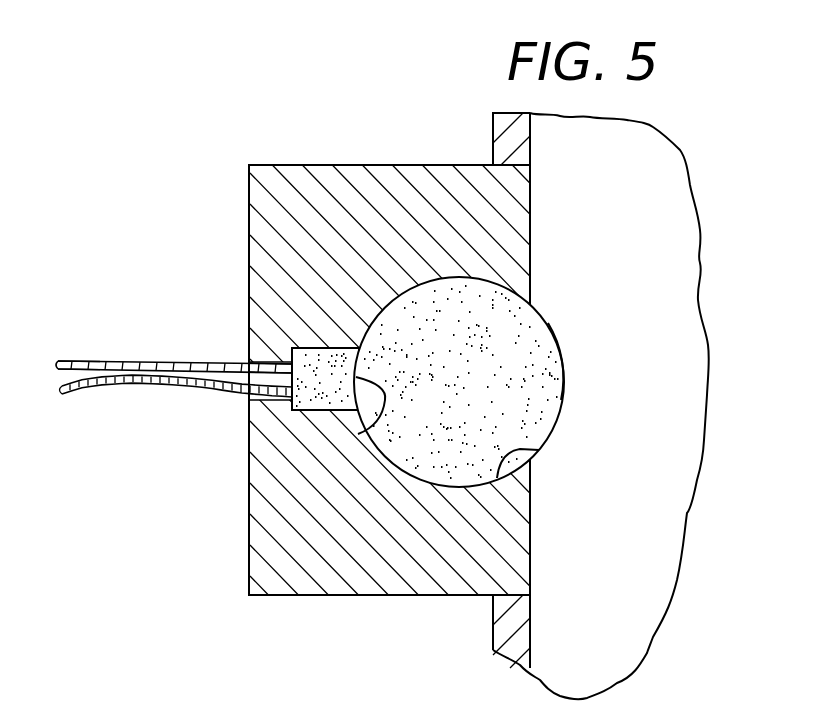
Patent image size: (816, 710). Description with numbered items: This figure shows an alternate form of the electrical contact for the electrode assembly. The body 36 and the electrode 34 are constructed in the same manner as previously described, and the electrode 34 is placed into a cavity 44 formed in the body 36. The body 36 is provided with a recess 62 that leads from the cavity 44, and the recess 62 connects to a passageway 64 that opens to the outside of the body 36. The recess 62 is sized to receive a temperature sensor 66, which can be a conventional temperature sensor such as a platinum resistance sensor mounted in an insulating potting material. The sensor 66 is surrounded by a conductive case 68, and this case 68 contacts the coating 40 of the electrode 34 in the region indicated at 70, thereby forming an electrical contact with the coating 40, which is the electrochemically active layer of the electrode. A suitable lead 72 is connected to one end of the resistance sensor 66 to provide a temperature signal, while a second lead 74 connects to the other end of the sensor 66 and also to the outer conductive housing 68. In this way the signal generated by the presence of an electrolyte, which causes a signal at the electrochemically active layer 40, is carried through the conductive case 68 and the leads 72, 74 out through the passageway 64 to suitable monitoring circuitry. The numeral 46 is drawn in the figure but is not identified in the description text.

The electrode 34 is at (463, 380).
The body 36 is at (433, 597).
The coating 40 is at (543, 417).
The cavity 44 is at (539, 450).
The exposed sphere surface 46 is at (557, 361).
The recess 62 is at (310, 347).
The passageway 64 is at (250, 366).
The temperature sensor 66 is at (295, 403).
The conductive case 68 is at (324, 348).
The region 70 is at (367, 432).
The lead 72 is at (68, 362).
The second lead 74 is at (70, 396).